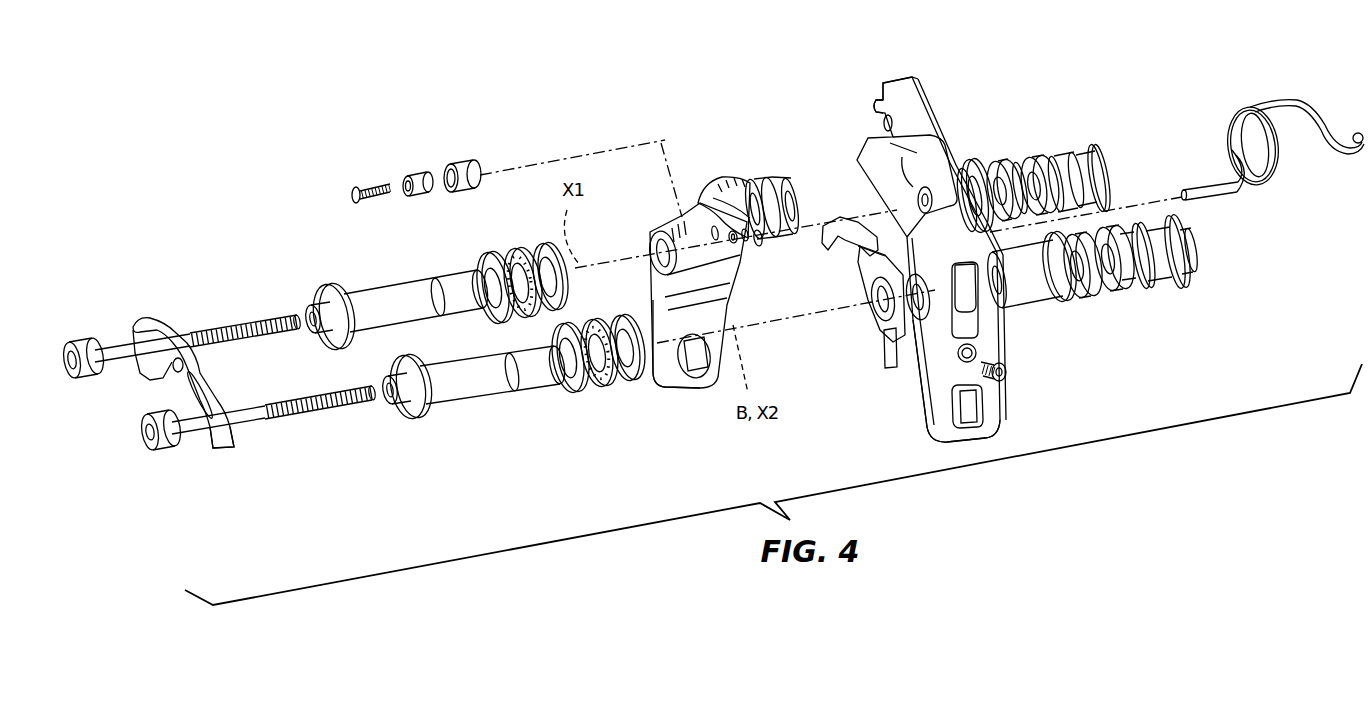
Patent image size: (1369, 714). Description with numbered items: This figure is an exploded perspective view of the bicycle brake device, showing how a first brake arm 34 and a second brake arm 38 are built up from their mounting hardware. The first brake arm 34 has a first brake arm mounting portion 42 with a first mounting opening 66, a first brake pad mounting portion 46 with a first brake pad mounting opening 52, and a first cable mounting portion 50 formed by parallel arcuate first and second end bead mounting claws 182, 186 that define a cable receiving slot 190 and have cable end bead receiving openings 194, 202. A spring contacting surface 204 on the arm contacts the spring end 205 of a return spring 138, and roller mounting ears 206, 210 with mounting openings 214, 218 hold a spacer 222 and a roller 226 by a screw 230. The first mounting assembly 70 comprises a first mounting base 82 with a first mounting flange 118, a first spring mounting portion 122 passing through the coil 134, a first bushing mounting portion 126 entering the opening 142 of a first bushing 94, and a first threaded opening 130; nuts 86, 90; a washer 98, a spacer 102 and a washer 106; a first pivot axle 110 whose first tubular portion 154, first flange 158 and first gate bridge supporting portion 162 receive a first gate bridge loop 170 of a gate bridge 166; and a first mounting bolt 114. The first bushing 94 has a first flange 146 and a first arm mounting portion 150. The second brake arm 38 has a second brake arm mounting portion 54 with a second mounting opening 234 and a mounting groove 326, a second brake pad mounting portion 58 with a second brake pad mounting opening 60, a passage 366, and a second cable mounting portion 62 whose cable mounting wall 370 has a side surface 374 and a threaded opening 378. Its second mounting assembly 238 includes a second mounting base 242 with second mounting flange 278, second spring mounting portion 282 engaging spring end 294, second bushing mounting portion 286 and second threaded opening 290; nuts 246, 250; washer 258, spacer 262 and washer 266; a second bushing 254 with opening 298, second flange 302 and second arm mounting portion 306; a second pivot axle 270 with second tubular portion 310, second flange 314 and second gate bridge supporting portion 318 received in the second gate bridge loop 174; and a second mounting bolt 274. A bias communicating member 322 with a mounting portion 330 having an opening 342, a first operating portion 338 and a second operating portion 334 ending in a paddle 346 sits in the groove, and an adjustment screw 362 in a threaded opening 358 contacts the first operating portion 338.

The first brake arm 34 is at (692, 138).
The second brake arm 38 is at (842, 92).
The first brake arm mounting portion 42 is at (648, 225).
The first brake pad mounting portion 46 is at (670, 393).
The first cable mounting portion 50 is at (755, 176).
The first brake pad mounting opening 52 is at (700, 375).
The second brake arm mounting portion 54 is at (913, 355).
The second brake pad mounting portion 58 is at (925, 440).
The second brake pad mounting opening 60 is at (962, 412).
The second cable mounting portion 62 is at (923, 70).
The first mounting opening 66 is at (655, 250).
The first mounting assembly 70 is at (198, 265).
The first mounting base 82 is at (1080, 127).
The nut 86 is at (1037, 156).
The nut 90 is at (1005, 168).
The first bushing 94 is at (990, 238).
The washer 98 is at (540, 247).
The spacer 102 is at (513, 255).
The washer 106 is at (482, 262).
The first pivot axle 110 is at (343, 275).
The first mounting bolt 114 is at (72, 340).
The first mounting flange 118 is at (1093, 150).
The first spring mounting portion 122 is at (1085, 176).
The first bushing mounting portion 126 is at (1056, 158).
The first threaded opening 130 is at (1022, 163).
The coil 134 is at (1274, 179).
The return spring 138 is at (1253, 78).
The opening 142 is at (918, 203).
The first flange 146 is at (980, 162).
The first arm mounting portion 150 is at (967, 180).
The first tubular portion 154 is at (392, 297).
The first flange 158 is at (323, 290).
The first gate bridge supporting portion 162 is at (312, 312).
The gate bridge 166 is at (222, 366).
The first gate bridge loop 170 is at (143, 318).
The second gate bridge loop 174 is at (226, 449).
The first end bead mounting claw 182 is at (752, 182).
The second end bead mounting claw 186 is at (775, 192).
The cable receiving slot 190 is at (762, 196).
The first cable end bead receiving opening 194 is at (738, 216).
The second cable end bead receiving opening 202 is at (792, 208).
The spring contacting surface 204 is at (720, 291).
The spring end 205 is at (1197, 190).
The roller mounting ear 206 is at (712, 238).
The roller mounting ear 210 is at (763, 245).
The mounting opening 214 is at (736, 243).
The mounting opening 218 is at (746, 246).
The spacer 222 is at (408, 180).
The roller 226 is at (455, 165).
The screw 230 is at (353, 187).
The second mounting opening 234 is at (915, 300).
The second mounting assembly 238 is at (296, 465).
The second mounting base 242 is at (1193, 272).
The nut 246 is at (1120, 290).
The nut 250 is at (1085, 300).
The second bushing 254 is at (1033, 307).
The washer 258 is at (622, 385).
The spacer 262 is at (595, 390).
The washer 266 is at (565, 390).
The second pivot axle 270 is at (450, 412).
The second mounting bolt 274 is at (143, 438).
The second mounting flange 278 is at (1185, 253).
The second spring mounting portion 282 is at (1162, 270).
The second bushing mounting portion 286 is at (1145, 273).
The second threaded opening 290 is at (1107, 284).
The spring end 294 is at (1320, 122).
The opening 298 is at (1007, 312).
The second flange 302 is at (1040, 288).
The second arm mounting portion 306 is at (1058, 292).
The second tubular portion 310 is at (477, 387).
The second flange 314 is at (413, 417).
The second gate bridge supporting portion 318 is at (390, 380).
The bias communicating member 322 is at (843, 337).
The mounting groove 326 is at (950, 268).
The bias communicating member mounting portion 330 is at (874, 312).
The second operating portion 334 is at (860, 263).
The first operating portion 338 is at (881, 358).
The opening 342 is at (877, 298).
The paddle 346 is at (845, 233).
The threaded opening 358 is at (974, 360).
The adjustment screw 362 is at (1006, 374).
The passage 366 is at (896, 148).
The cable mounting wall 370 is at (897, 85).
The side surface 374 is at (874, 108).
The threaded opening 378 is at (884, 125).